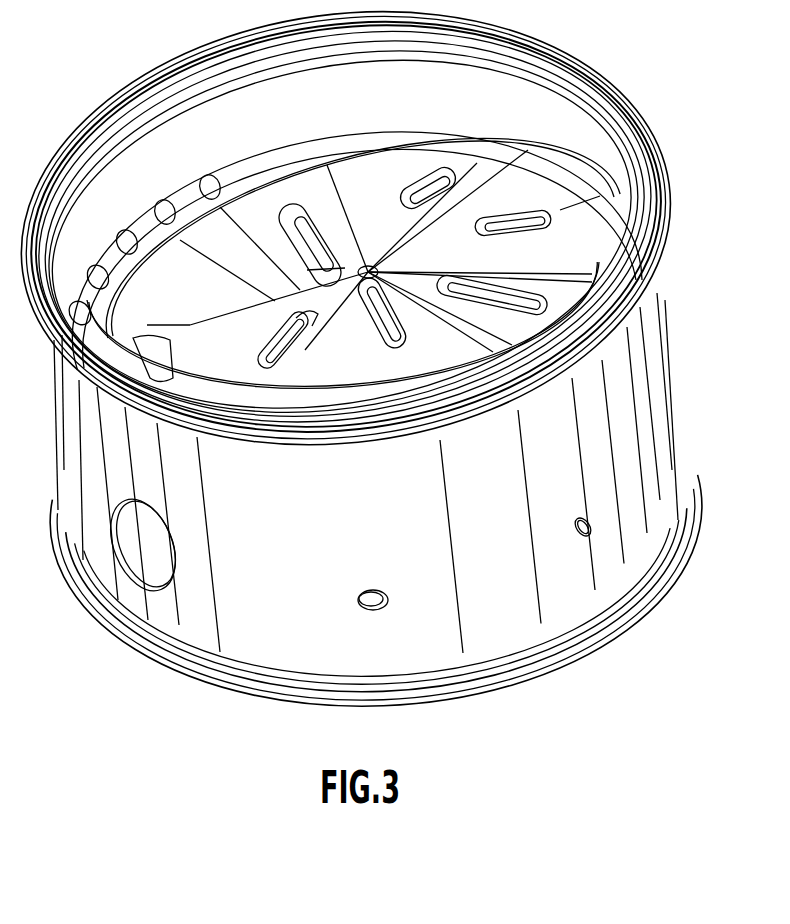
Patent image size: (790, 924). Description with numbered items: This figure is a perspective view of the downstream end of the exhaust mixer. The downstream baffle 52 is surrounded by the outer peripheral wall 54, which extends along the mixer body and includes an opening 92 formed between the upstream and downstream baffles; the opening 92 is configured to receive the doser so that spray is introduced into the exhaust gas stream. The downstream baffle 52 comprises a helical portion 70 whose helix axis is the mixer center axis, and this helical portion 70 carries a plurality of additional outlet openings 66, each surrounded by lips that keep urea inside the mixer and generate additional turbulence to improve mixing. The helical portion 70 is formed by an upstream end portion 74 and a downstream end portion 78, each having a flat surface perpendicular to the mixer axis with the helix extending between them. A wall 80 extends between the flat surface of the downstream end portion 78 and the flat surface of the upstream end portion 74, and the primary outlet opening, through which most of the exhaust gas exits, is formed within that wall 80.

The downstream baffle 52 is at (355, 183).
The outer peripheral wall 54 is at (637, 398).
The additional outlet openings 66 is at (437, 188).
The helical portion 70 is at (560, 210).
The upstream end portion 74 is at (147, 297).
The downstream end portion 78 is at (222, 355).
The wall 80 is at (76, 358).
The opening 92 is at (130, 580).